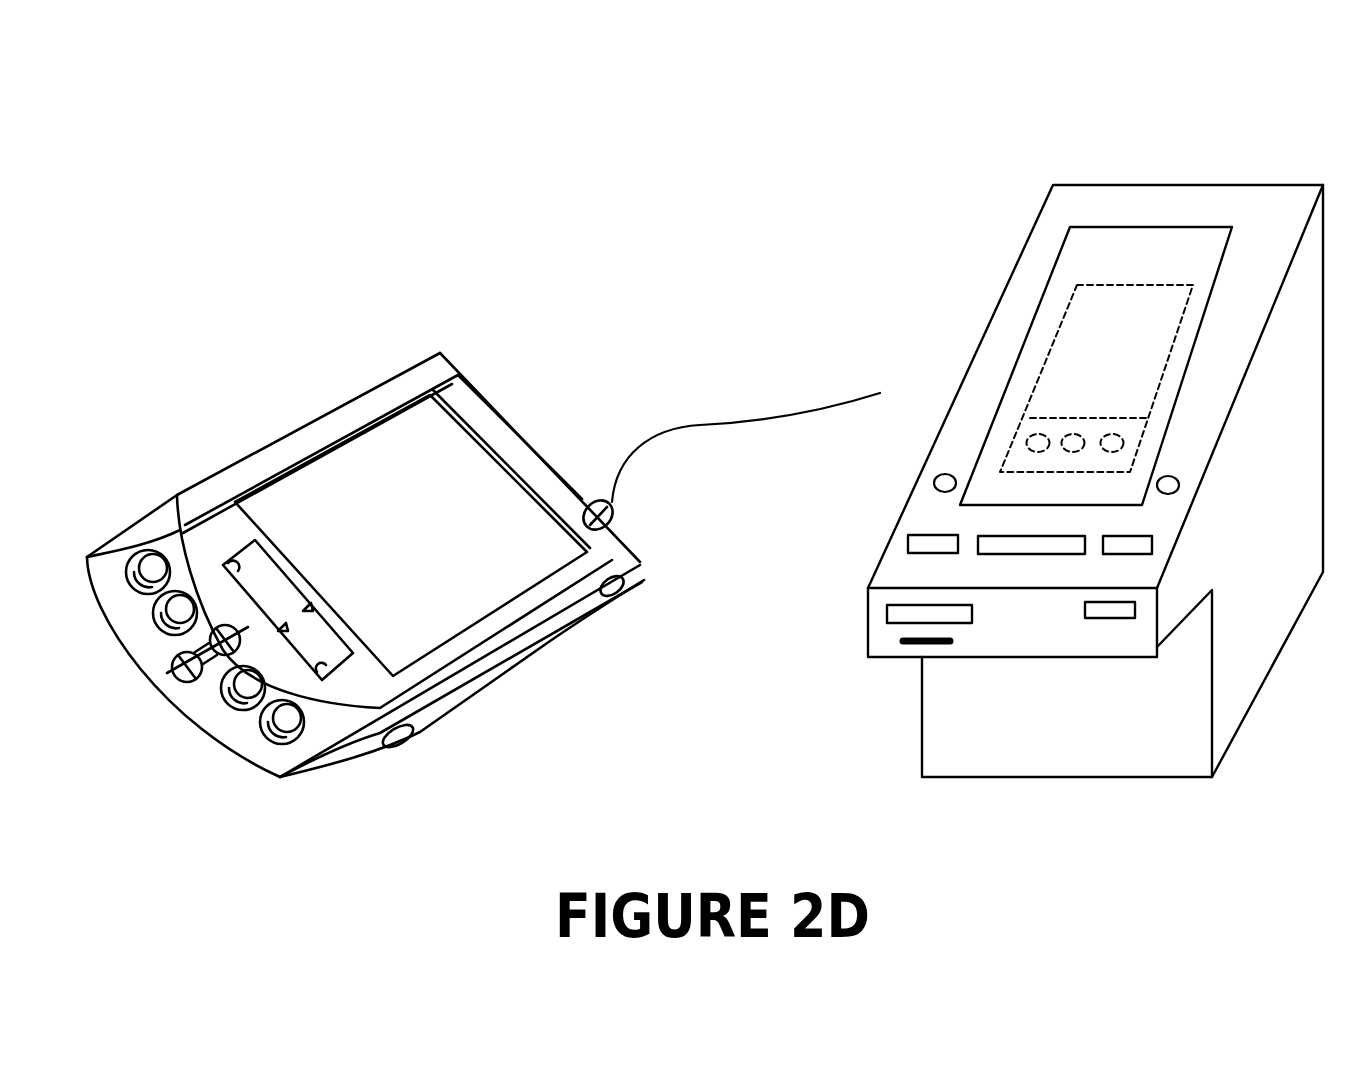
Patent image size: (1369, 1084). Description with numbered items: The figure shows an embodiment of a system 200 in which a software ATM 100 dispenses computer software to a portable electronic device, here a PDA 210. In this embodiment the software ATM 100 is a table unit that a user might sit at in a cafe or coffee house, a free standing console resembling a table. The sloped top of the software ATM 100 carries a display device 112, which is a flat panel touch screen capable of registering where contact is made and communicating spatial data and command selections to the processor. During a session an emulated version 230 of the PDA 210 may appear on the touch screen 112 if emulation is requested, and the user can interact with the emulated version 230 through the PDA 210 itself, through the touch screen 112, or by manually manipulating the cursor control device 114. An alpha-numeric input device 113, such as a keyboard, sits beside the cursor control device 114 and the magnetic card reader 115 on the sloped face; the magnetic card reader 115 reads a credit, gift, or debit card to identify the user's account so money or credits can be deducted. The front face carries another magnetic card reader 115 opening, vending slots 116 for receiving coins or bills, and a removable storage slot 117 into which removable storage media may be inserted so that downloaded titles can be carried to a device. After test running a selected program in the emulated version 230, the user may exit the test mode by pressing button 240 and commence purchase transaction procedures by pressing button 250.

The system 200 is at (142, 71).
The PDA 210 is at (435, 527).
The software ATM 100 is at (1178, 215).
The display device 112 is at (1158, 259).
The emulated version of PDA 230 is at (1137, 358).
The button 240 is at (934, 482).
The button 250 is at (1180, 484).
The magnetic card reader 115 is at (908, 543).
The alpha-numeric input device 113 is at (1028, 558).
The cursor control device 114 is at (1152, 547).
The vending slots 116 is at (1105, 624).
The removable storage slot 117 is at (958, 641).